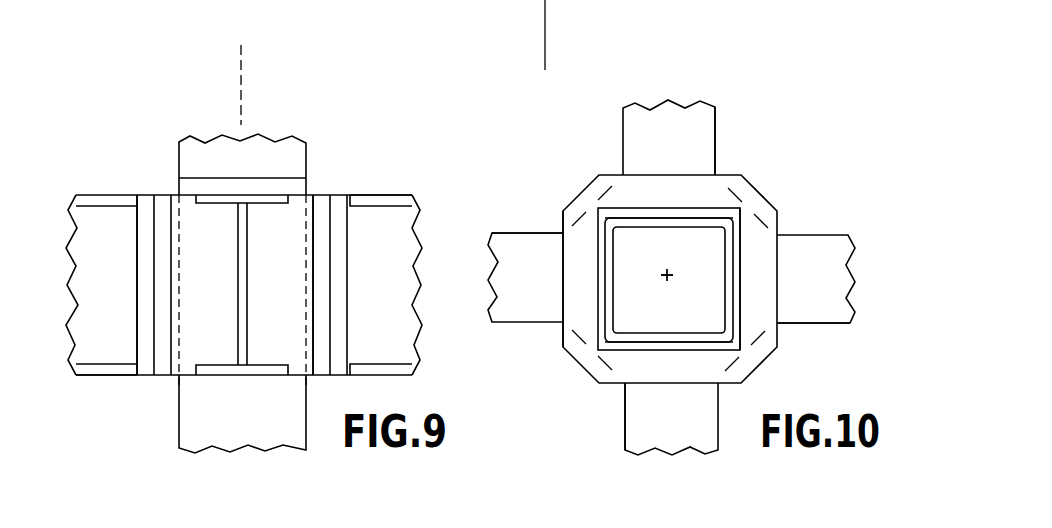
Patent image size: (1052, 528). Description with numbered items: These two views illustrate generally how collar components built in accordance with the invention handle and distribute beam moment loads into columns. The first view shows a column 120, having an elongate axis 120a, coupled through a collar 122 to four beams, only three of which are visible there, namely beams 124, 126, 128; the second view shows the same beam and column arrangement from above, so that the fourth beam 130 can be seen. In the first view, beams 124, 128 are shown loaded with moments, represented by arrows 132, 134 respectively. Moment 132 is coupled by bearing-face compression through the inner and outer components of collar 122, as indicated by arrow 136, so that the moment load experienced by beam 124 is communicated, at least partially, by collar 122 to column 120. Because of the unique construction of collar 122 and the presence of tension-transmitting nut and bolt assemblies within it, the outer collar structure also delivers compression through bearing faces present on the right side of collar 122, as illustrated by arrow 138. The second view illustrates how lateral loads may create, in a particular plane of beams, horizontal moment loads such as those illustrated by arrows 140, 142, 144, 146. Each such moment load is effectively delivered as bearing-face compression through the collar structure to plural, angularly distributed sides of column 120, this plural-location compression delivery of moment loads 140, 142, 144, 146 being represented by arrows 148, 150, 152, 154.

In FIG. 9, the column 120 is at (266, 152).
In FIG. 10, the column 120 is at (712, 303).
In FIG. 9, the elongate axis 120a is at (241, 86).
In FIG. 10, the elongate axis 120a is at (717, 255).
In FIG. 9, the collar 122 is at (158, 186).
In FIG. 9, the beam 124 is at (98, 307).
In FIG. 10, the beam 124 is at (520, 310).
In FIG. 9, the beam 126 is at (232, 328).
In FIG. 10, the beam 126 is at (633, 400).
In FIG. 9, the beam 128 is at (398, 253).
In FIG. 10, the beam 128 is at (824, 242).
In FIG. 10, the fourth beam 130 is at (617, 121).
In FIG. 9, the moment arrow 132 is at (93, 443).
In FIG. 9, the moment arrow 134 is at (393, 186).
In FIG. 9, the compression arrow 136 is at (168, 221).
In FIG. 9, the compression delivery arrow 138 is at (317, 350).
In FIG. 10, the horizontal moment load arrow 140 is at (520, 219).
In FIG. 10, the horizontal moment load arrow 142 is at (615, 425).
In FIG. 10, the horizontal moment load arrow 144 is at (822, 392).
In FIG. 10, the horizontal moment load arrow 146 is at (785, 132).
In FIG. 10, the compression delivery arrow 148 is at (597, 310).
In FIG. 10, the compression delivery arrow 150 is at (703, 351).
In FIG. 10, the compression delivery arrow 152 is at (745, 245).
In FIG. 10, the compression delivery arrow 154 is at (637, 209).